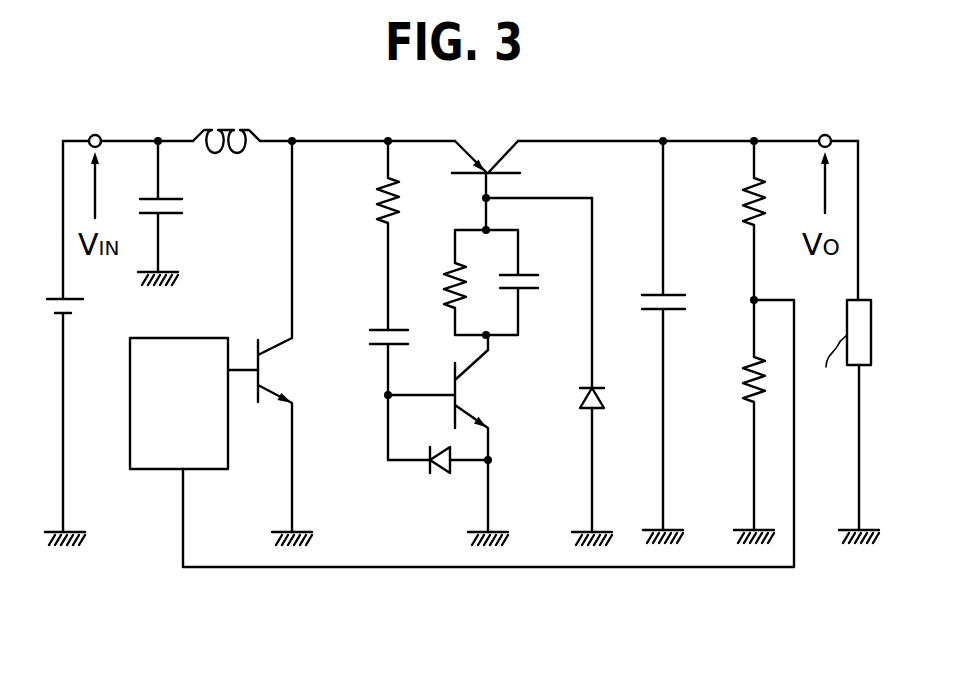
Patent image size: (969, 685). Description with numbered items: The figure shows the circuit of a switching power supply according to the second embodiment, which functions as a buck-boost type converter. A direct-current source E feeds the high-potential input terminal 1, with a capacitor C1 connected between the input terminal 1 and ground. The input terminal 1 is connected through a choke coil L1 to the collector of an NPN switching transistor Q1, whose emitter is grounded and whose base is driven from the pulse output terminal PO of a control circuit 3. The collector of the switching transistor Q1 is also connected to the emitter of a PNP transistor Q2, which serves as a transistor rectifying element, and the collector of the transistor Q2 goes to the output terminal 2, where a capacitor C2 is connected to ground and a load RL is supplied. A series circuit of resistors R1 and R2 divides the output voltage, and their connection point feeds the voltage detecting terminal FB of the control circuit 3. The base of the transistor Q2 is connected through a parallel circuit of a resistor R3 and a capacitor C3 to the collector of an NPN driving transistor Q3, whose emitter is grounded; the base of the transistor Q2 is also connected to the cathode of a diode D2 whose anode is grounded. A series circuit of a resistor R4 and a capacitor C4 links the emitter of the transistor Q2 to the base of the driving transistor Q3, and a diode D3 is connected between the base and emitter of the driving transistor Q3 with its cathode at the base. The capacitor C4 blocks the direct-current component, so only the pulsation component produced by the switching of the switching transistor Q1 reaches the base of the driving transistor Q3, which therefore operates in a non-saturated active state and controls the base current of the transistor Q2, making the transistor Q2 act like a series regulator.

The input terminal 1 is at (96, 135).
The output terminal 2 is at (824, 135).
The control circuit 3 is at (203, 338).
The battery E is at (74, 343).
The capacitor C1 is at (183, 213).
The choke coil L1 is at (226, 124).
The switching transistor Q1 is at (303, 343).
The transistor Q2 is at (513, 185).
The driving transistor Q3 is at (467, 440).
The resistor R1 is at (731, 220).
The resistor R2 is at (737, 421).
The resistor R3 is at (442, 282).
The resistor R4 is at (366, 235).
The capacitor C2 is at (648, 342).
The capacitor C3 is at (530, 282).
The capacitor C4 is at (373, 376).
The diode D2 is at (608, 371).
The diode D3 is at (440, 482).
The load resistor RL is at (843, 342).